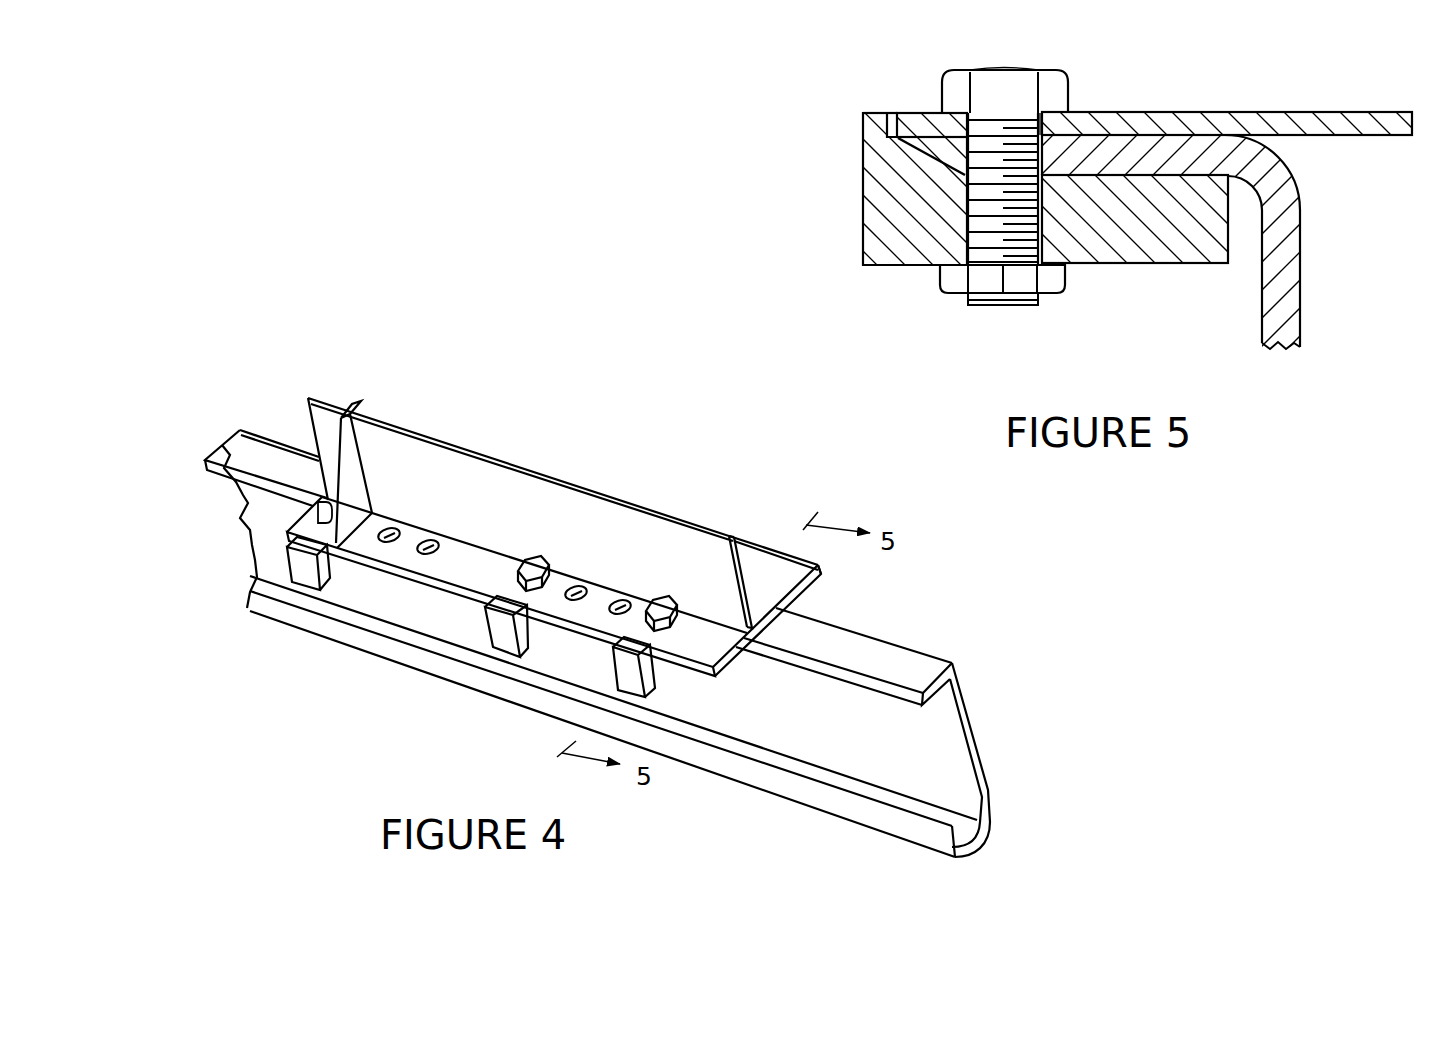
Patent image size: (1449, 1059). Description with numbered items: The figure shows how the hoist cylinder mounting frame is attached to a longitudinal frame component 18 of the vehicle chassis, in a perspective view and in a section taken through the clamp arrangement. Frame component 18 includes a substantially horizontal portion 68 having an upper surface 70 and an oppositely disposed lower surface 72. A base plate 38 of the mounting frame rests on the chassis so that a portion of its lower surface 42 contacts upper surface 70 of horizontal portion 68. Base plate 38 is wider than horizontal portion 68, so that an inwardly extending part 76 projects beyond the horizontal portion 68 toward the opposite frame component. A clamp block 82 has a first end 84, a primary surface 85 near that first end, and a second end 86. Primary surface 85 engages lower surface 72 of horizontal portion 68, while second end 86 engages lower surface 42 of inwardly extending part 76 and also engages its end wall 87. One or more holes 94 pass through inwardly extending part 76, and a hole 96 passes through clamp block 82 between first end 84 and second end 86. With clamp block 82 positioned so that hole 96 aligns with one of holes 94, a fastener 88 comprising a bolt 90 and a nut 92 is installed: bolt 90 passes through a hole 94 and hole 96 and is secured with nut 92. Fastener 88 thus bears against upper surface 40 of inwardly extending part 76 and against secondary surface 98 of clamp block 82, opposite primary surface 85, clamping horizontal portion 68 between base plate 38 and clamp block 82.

In FIG. 5, the second longitudinal frame component 18 is at (1304, 300).
In FIG. 4, the second longitudinal frame component 18 is at (902, 638).
In FIG. 5, the second base plate 38 is at (1350, 118).
In FIG. 4, the second base plate 38 is at (780, 538).
In FIG. 5, the upper surface of inwardly extending part 40 is at (1150, 105).
In FIG. 4, the upper surface of inwardly extending part 40 is at (755, 565).
In FIG. 5, the lower surface of second base plate 42 is at (907, 141).
In FIG. 4, the lower surface of second base plate 42 is at (827, 587).
In FIG. 5, the horizontal portion 68 is at (1145, 171).
In FIG. 4, the horizontal portion 68 is at (850, 682).
In FIG. 4, the upper surface of horizontal portion 70 is at (932, 666).
In FIG. 5, the lower surface of horizontal portion 72 is at (1080, 198).
In FIG. 4, the lower surface of horizontal portion 72 is at (920, 710).
In FIG. 5, the inwardly extending part 76 is at (906, 110).
In FIG. 4, the inwardly extending part 76 is at (684, 647).
In FIG. 5, the clamp block 82 is at (1175, 229).
In FIG. 4, the clamp block 82 is at (485, 634).
In FIG. 5, the first end 84 is at (1242, 202).
In FIG. 5, the primary surface 85 is at (1190, 166).
In FIG. 5, the second end 86 is at (866, 111).
In FIG. 5, the end wall 87 is at (886, 124).
In FIG. 4, the end wall 87 is at (699, 680).
In FIG. 5, the fastener 88 is at (1010, 66).
In FIG. 4, the fastener 88 is at (532, 561).
In FIG. 5, the bolt 90 is at (955, 92).
In FIG. 5, the nut 92 is at (957, 282).
In FIG. 5, the holes 94 is at (1054, 126).
In FIG. 4, the holes 94 is at (390, 527).
In FIG. 5, the hole 96 is at (958, 206).
In FIG. 5, the secondary surface 98 is at (1087, 267).